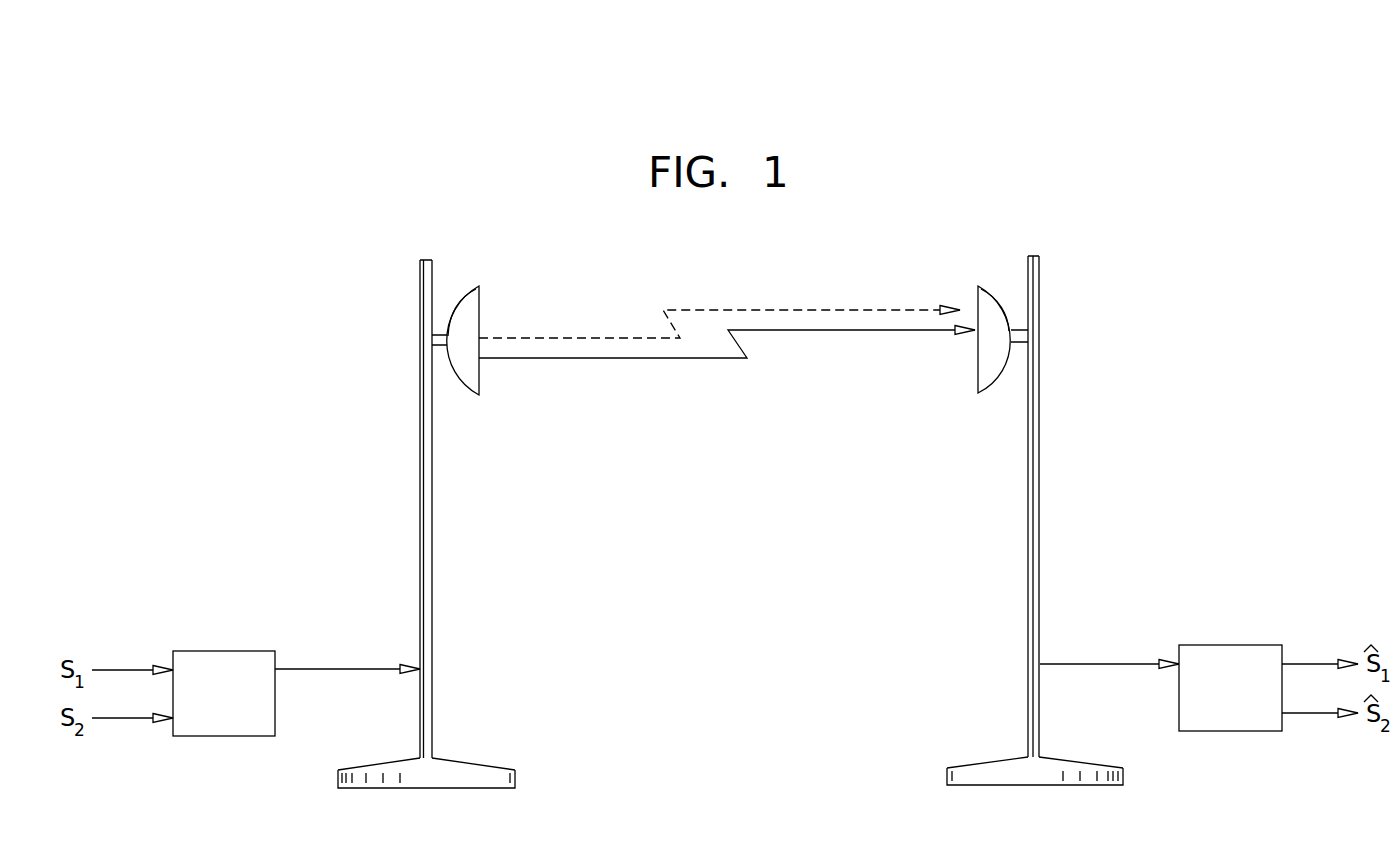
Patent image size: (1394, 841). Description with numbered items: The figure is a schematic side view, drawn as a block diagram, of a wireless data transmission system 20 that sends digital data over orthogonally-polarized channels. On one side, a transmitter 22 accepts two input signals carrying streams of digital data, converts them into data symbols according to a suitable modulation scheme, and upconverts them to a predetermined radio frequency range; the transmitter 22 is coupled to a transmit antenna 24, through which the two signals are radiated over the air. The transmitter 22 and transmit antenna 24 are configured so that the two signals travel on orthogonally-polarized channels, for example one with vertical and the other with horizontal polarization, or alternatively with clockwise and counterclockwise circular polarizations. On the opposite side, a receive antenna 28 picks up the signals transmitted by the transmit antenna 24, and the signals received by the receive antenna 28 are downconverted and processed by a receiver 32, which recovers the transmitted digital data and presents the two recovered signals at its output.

The wireless data transmission system 20 is at (333, 104).
The transmitter 22 is at (232, 651).
The transmit antenna 24 is at (468, 300).
The receive antenna 28 is at (988, 297).
The receiver 32 is at (1247, 645).